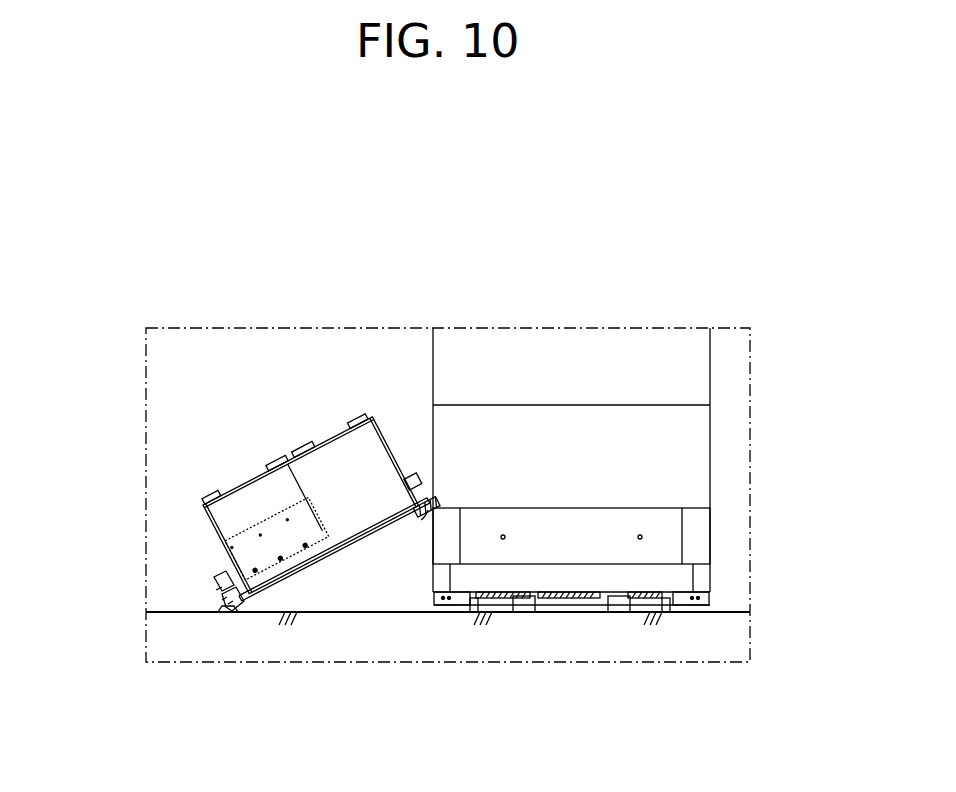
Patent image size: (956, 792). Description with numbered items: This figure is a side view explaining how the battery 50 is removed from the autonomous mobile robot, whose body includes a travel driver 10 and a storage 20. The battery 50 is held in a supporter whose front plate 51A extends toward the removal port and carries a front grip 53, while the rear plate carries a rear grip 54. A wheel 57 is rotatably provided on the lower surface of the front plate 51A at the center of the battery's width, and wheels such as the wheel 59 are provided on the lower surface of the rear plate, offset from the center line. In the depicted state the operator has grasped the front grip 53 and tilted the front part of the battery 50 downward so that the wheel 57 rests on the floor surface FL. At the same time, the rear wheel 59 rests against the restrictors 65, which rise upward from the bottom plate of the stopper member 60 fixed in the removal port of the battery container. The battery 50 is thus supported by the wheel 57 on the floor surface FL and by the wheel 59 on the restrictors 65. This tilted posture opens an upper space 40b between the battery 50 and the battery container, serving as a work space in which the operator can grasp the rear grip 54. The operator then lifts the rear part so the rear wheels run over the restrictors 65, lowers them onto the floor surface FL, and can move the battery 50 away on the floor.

The travel driver 10 is at (561, 470).
The storage 20 is at (722, 382).
The space 40b is at (440, 418).
The battery 50 is at (273, 493).
The front plate 51A is at (218, 598).
The front grip 53 is at (212, 578).
The rear grip 54 is at (425, 478).
The wheel 57 is at (226, 620).
The wheel 59 is at (451, 500).
The stopper member 60 is at (452, 507).
The restrictors 65 is at (434, 510).
The floor surface FL is at (730, 612).